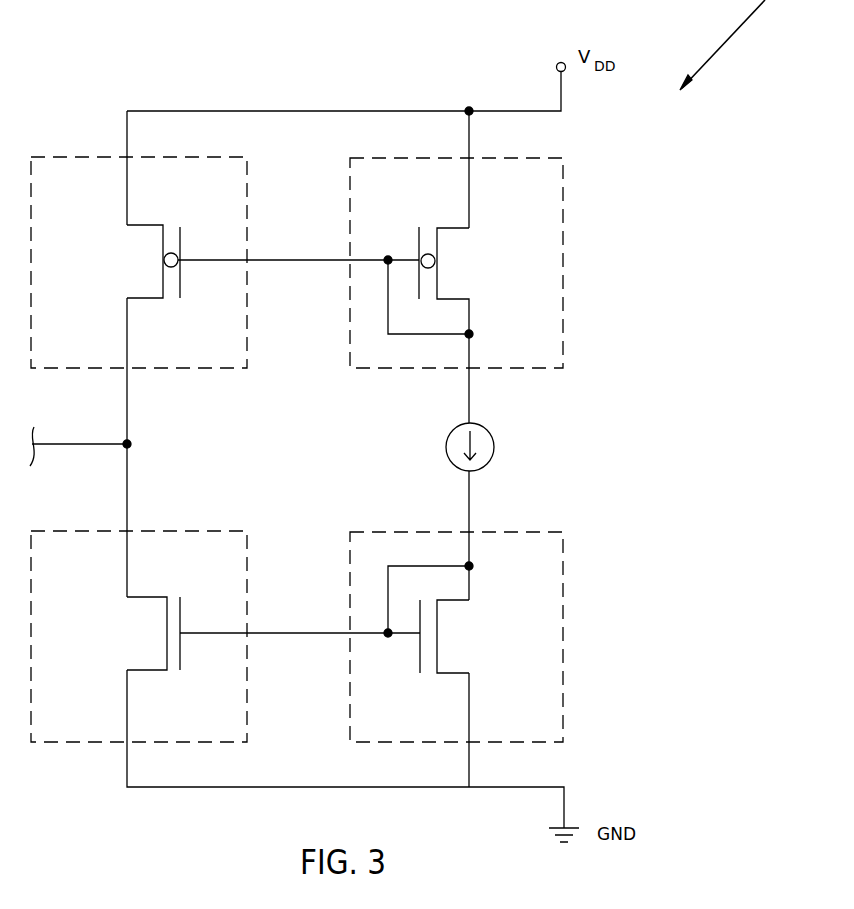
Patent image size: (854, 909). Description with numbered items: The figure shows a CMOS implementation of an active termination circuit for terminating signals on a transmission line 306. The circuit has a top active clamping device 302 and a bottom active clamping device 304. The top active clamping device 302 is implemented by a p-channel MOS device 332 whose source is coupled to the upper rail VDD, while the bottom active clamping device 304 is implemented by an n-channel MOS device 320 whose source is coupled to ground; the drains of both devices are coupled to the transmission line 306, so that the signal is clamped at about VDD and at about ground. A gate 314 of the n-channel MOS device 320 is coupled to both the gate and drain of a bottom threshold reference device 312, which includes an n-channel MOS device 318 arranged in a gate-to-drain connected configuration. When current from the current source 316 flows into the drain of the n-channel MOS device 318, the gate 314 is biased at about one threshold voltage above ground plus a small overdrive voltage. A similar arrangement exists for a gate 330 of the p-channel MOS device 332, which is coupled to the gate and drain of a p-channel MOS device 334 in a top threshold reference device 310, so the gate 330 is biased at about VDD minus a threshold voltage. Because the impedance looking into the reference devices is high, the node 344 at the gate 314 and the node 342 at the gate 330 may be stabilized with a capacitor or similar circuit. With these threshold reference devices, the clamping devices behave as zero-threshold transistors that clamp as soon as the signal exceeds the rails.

The top active clamping device 302 is at (62, 183).
The bottom active clamping device 304 is at (60, 742).
The transmission line 306 is at (68, 445).
The top threshold reference device 310 is at (528, 182).
The bottom threshold reference device 312 is at (530, 570).
The gate 314 is at (202, 675).
The current source 316 is at (483, 435).
The n-channel MOS device 318 is at (437, 637).
The n-channel MOS device 320 is at (165, 633).
The gate 330 is at (180, 240).
The p-channel MOS device 332 is at (194, 232).
The p-channel MOS device 334 is at (435, 259).
The node 342 is at (388, 260).
The node 344 is at (393, 637).